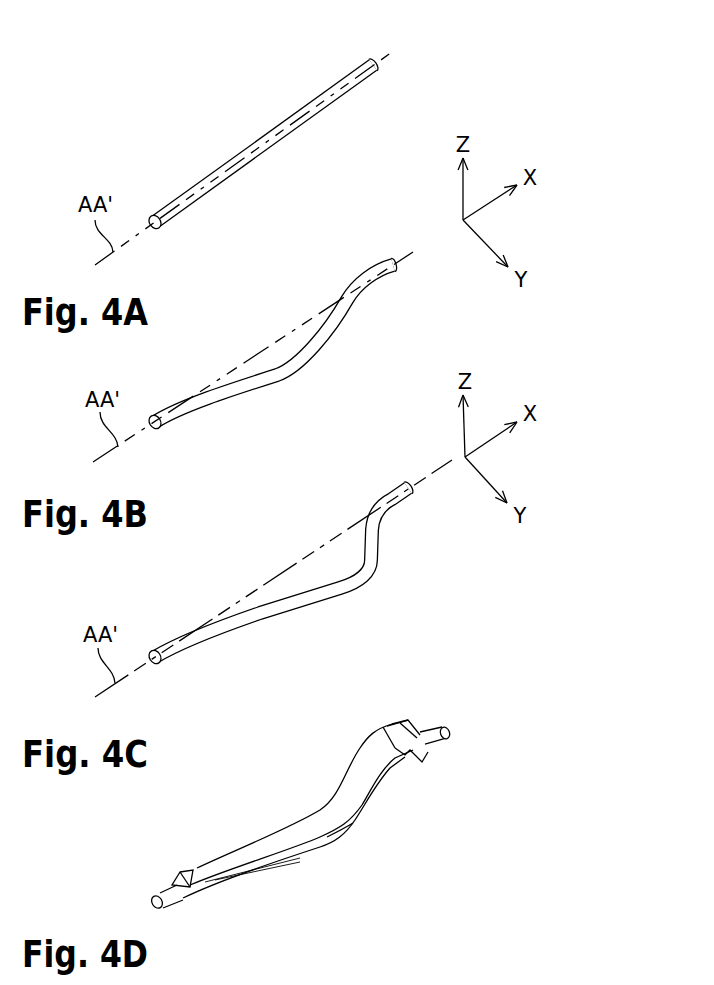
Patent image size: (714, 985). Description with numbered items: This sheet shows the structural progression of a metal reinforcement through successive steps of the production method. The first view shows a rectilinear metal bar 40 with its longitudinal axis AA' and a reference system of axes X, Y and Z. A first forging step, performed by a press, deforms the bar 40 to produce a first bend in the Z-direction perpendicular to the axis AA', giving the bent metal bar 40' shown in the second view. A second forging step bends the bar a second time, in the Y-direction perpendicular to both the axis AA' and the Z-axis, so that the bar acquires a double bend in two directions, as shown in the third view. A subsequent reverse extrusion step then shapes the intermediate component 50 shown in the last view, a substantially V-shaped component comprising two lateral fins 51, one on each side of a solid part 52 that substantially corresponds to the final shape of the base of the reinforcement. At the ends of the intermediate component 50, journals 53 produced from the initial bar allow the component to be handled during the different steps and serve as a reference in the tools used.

In FIG. 4A, the rectilinear metal bar 40 is at (257, 145).
In FIG. 4B, the bent metal bar 40' is at (272, 344).
In FIG. 4D, the intermediate component 50 is at (307, 834).
In FIG. 4D, the lateral fins 51 is at (350, 767).
In FIG. 4D, the solid part 52 is at (414, 770).
In FIG. 4D, the journals 53 is at (170, 887).